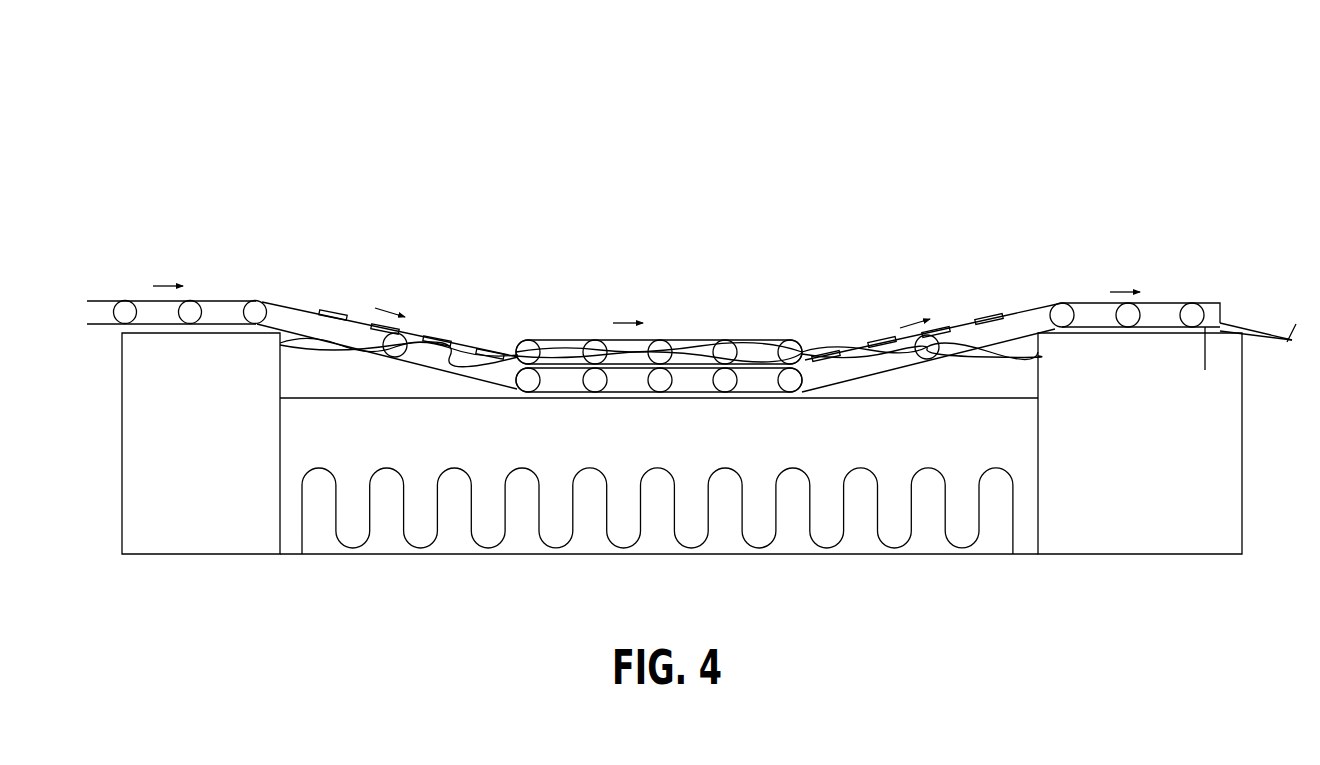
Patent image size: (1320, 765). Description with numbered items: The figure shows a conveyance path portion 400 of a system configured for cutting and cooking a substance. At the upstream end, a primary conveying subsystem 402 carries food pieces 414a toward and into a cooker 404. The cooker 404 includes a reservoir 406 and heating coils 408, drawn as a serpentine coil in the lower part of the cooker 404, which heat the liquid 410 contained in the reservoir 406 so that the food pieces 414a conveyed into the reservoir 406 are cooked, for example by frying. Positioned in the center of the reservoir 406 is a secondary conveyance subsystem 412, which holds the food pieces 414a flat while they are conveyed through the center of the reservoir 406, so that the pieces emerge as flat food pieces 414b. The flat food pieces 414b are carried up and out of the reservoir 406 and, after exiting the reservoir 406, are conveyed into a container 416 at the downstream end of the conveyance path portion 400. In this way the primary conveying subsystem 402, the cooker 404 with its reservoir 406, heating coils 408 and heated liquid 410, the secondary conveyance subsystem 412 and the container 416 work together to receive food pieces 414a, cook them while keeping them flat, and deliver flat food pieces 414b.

The conveyance path portion 400 is at (258, 138).
The primary conveying subsystem 402 is at (115, 297).
The cooker 404 is at (117, 452).
The reservoir 406 is at (966, 392).
The heating coils 408 is at (840, 544).
The liquid 410 is at (552, 340).
The secondary conveyance subsystem 412 is at (745, 335).
The food pieces 414a is at (337, 318).
The flat food pieces 414b is at (987, 312).
The container 416 is at (1265, 340).